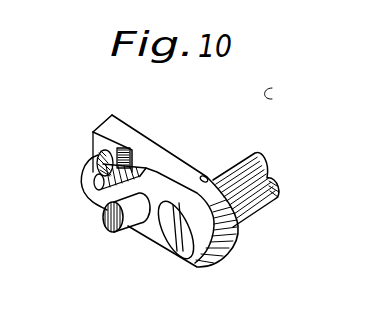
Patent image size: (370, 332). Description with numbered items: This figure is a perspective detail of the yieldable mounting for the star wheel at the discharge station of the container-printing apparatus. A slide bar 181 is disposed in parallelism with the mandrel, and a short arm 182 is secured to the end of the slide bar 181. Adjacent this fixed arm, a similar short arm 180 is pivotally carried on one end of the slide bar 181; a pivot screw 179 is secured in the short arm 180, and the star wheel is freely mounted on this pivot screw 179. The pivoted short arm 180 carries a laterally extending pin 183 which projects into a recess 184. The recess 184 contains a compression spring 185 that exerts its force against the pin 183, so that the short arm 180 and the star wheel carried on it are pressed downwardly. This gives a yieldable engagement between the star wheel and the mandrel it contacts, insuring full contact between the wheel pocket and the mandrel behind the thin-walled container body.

The pivot screw 179 is at (116, 231).
The short arm 180 is at (181, 260).
The slide bar 181 is at (258, 214).
The short arm 182 is at (177, 162).
The laterally extending pin 183 is at (100, 183).
The recess 184 is at (105, 146).
The compression spring 185 is at (120, 148).